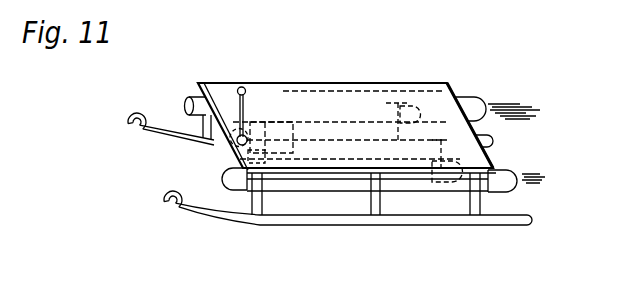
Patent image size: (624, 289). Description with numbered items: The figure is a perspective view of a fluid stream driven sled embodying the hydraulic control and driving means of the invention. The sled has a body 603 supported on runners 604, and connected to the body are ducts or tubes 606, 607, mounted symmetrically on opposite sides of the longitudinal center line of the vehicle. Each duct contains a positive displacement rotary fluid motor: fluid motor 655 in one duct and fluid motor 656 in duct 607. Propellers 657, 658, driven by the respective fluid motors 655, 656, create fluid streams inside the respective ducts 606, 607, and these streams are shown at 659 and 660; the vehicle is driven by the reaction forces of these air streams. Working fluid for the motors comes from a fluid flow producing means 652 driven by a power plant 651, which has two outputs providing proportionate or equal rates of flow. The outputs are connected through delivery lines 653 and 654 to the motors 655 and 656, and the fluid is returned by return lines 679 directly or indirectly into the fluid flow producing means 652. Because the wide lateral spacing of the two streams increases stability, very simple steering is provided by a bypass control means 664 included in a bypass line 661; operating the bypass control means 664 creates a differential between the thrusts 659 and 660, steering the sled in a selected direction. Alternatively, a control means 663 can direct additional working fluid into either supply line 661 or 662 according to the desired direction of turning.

The body 603 is at (353, 95).
The runners 604 is at (128, 119).
The duct 606 is at (188, 104).
The duct 607 is at (228, 185).
The power plant 651 is at (282, 150).
The fluid flow producing means 652 is at (265, 125).
The delivery line 653 is at (333, 120).
The delivery line 654 is at (335, 158).
The positive displacement rotary fluid motor 655 is at (405, 110).
The positive displacement rotary fluid motor 656 is at (445, 188).
The propeller 657 is at (390, 103).
The propeller 658 is at (427, 193).
The fluid stream 659 is at (518, 108).
The fluid stream 660 is at (535, 177).
The bypass line 661 is at (240, 88).
The supply line 662 is at (240, 153).
The control means 663 is at (237, 143).
The bypass control means 664 is at (245, 103).
The return lines 679 is at (433, 140).